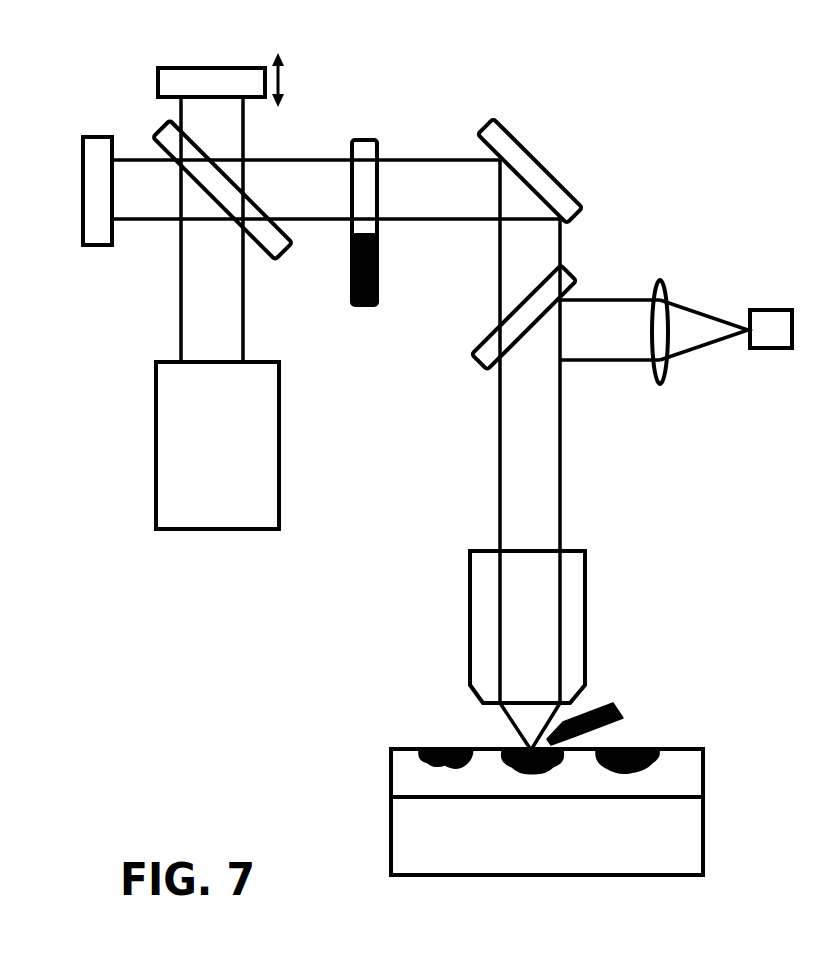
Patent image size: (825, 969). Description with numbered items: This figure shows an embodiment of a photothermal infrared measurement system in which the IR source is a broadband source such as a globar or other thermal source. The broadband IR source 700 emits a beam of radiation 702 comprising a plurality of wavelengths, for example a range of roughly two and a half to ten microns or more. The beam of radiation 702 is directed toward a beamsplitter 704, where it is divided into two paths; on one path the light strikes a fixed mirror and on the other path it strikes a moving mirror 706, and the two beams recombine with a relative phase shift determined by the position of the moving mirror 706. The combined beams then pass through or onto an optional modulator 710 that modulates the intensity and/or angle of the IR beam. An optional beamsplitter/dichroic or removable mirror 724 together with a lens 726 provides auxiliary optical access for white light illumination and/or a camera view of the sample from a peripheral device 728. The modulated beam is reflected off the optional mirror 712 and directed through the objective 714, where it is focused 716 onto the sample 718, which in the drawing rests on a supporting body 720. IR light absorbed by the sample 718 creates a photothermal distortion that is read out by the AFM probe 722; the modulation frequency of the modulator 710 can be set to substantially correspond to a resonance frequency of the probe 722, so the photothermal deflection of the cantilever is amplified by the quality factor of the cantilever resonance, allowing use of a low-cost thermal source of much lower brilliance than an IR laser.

The broadband IR source 700 is at (217, 445).
The beam of radiation 702 is at (212, 229).
The beamsplitter 704 is at (234, 209).
The moving mirror 706 is at (221, 66).
The modulator 710 is at (363, 205).
The mirror 712 is at (530, 171).
The objective 714 is at (502, 627).
The focus 716 is at (510, 733).
The sample 718 is at (520, 773).
The substrate 720 is at (547, 836).
The AFM probe 722 is at (610, 715).
The beamsplitter/dichroic or removable mirror 724 is at (540, 309).
The lens 726 is at (694, 316).
The peripheral device 728 is at (771, 315).